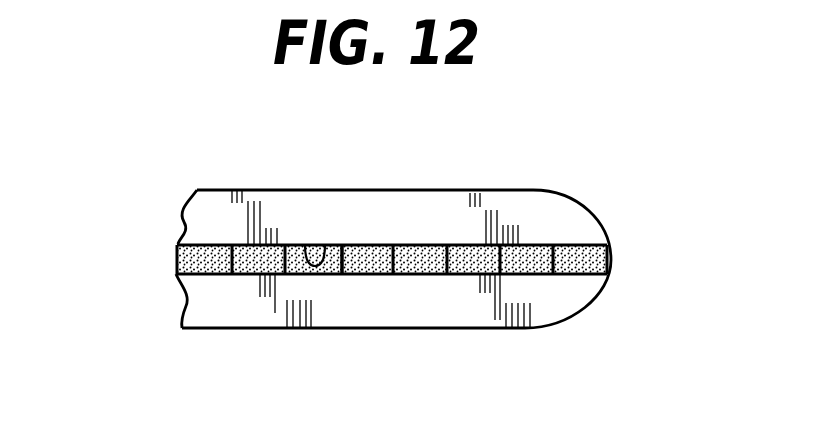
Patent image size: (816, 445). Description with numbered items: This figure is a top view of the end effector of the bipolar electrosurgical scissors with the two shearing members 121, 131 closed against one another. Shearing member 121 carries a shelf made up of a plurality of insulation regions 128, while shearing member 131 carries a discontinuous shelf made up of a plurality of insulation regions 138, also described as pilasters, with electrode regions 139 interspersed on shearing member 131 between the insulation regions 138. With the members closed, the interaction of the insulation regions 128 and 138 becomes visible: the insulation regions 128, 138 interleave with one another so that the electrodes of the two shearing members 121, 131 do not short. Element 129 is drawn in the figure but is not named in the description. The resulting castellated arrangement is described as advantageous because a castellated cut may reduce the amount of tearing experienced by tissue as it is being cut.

The shearing member 121 is at (543, 309).
The insulation regions 128 is at (183, 259).
The insulating spacer 129 is at (364, 260).
The shearing member 131 is at (524, 201).
The insulation regions 138 is at (247, 244).
The electrode regions 139 is at (325, 246).